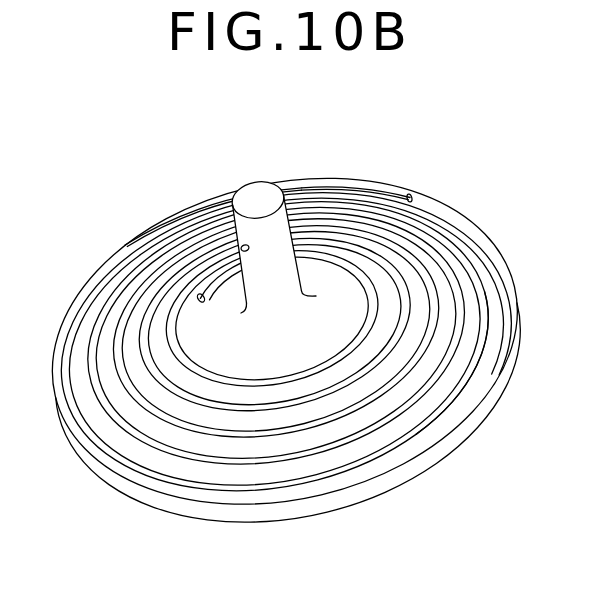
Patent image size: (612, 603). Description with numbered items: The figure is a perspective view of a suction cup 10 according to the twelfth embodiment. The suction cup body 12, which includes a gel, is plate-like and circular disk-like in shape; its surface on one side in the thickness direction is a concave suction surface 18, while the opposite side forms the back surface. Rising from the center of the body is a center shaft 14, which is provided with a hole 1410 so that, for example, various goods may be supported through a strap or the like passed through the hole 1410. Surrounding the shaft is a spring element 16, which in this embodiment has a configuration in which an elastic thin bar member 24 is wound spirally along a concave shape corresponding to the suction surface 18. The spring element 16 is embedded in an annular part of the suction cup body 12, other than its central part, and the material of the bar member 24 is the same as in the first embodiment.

The suction cup 10 is at (190, 172).
The suction cup body 12 is at (464, 232).
The center shaft 14 is at (182, 215).
The hole 1410 is at (240, 250).
The spring element 16 is at (475, 378).
The suction surface 18 is at (381, 498).
The bar member 24 is at (371, 180).